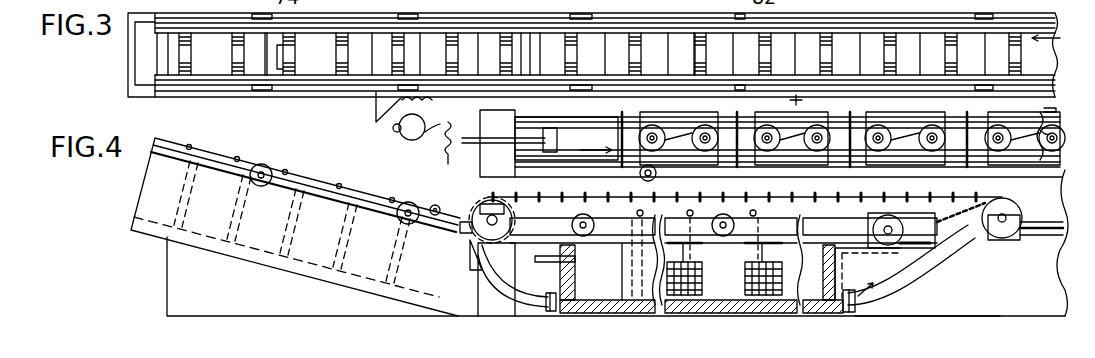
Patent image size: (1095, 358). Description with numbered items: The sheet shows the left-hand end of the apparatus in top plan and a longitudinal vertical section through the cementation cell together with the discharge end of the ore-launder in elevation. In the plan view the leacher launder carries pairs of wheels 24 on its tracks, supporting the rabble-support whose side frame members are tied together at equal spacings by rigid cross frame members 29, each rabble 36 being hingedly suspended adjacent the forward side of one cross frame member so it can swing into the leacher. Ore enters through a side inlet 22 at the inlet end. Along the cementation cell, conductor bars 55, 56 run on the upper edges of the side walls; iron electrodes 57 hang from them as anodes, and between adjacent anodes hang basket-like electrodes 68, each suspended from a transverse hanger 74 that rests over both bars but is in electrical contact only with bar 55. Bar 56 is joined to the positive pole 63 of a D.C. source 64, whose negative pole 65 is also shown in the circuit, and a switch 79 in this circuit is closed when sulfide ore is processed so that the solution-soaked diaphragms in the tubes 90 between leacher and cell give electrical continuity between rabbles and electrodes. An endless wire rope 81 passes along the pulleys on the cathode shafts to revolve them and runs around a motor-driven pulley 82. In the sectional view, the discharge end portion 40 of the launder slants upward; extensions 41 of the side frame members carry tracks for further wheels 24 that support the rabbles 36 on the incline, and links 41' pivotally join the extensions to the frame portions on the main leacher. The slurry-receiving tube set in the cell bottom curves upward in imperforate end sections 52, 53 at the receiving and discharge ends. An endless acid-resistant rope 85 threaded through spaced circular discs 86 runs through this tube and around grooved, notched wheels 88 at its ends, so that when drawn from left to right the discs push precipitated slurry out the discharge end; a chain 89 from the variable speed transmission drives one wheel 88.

In FIG. 4, the side inlet 22 is at (872, 306).
In FIG. 4, the wheels 24 is at (411, 204).
In FIG. 3, the cross frame members 29 is at (284, 54).
In FIG. 3, the rabbles 36 is at (563, 57).
In FIG. 3, the discharge end portion 40 is at (124, 71).
In FIG. 4, the discharge end portion 40 is at (230, 149).
In FIG. 4, the extensions 41 is at (322, 183).
In FIG. 4, the links 41' is at (472, 209).
In FIG. 4, the imperforate end section 52 is at (503, 290).
In FIG. 4, the imperforate end section 53 is at (918, 272).
In FIG. 3, the conductor bar 55 is at (838, 162).
In FIG. 3, the conductor bar 56 is at (606, 122).
In FIG. 3, the iron electrodes 57 is at (978, 165).
In FIG. 4, the iron electrodes 57 is at (620, 282).
In FIG. 3, the positive pole 63 is at (438, 128).
In FIG. 3, the D.C. source 64 is at (405, 131).
In FIG. 3, the negative pole 65 is at (386, 129).
In FIG. 3, the electrodes 68 is at (898, 162).
In FIG. 4, the electrodes 68 is at (745, 276).
In FIG. 3, the transverse hanger 74 is at (1048, 135).
In FIG. 3, the switch 79 is at (364, 110).
In FIG. 3, the endless wire rope 81 is at (1052, 108).
In FIG. 4, the pulley 82 is at (928, 262).
In FIG. 4, the rope 85 is at (572, 186).
In FIG. 4, the circular discs 86 is at (615, 186).
In FIG. 3, the wheels 88 is at (490, 112).
In FIG. 4, the wheels 88 is at (1022, 207).
In FIG. 4, the chain 89 is at (1012, 240).
In FIG. 3, the tubes 90 is at (794, 98).